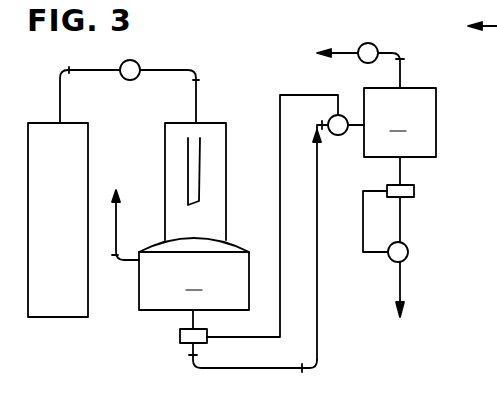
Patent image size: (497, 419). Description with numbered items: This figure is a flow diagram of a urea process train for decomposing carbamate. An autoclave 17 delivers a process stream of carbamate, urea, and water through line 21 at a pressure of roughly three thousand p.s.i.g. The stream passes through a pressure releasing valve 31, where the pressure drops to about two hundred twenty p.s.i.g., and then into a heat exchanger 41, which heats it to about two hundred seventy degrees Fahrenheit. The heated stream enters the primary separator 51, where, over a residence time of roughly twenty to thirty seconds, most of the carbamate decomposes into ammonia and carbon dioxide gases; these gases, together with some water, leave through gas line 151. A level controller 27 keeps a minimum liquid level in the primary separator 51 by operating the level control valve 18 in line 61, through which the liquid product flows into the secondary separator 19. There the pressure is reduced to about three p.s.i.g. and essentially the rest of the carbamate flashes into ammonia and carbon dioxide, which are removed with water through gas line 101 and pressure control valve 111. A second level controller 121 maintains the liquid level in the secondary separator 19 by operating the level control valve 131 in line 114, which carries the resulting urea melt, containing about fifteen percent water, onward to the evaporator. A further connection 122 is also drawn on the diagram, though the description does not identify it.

The autoclave 17 is at (88, 170).
The line 21 is at (60, 100).
The pressure releasing valve 31 is at (132, 80).
The heat exchanger 41 is at (165, 162).
The gas line 151 is at (116, 238).
The primary separator 51 is at (194, 274).
The level controller 27 is at (180, 339).
The line 61 is at (317, 252).
The level control valve 18 is at (344, 134).
The secondary separator 19 is at (400, 122).
The gas line 101 is at (402, 66).
The pressure control valve 111 is at (358, 46).
The level controller 121 is at (411, 197).
The line 114 is at (398, 232).
The level control valve 131 is at (408, 259).
The feed line 122 is at (482, 15).